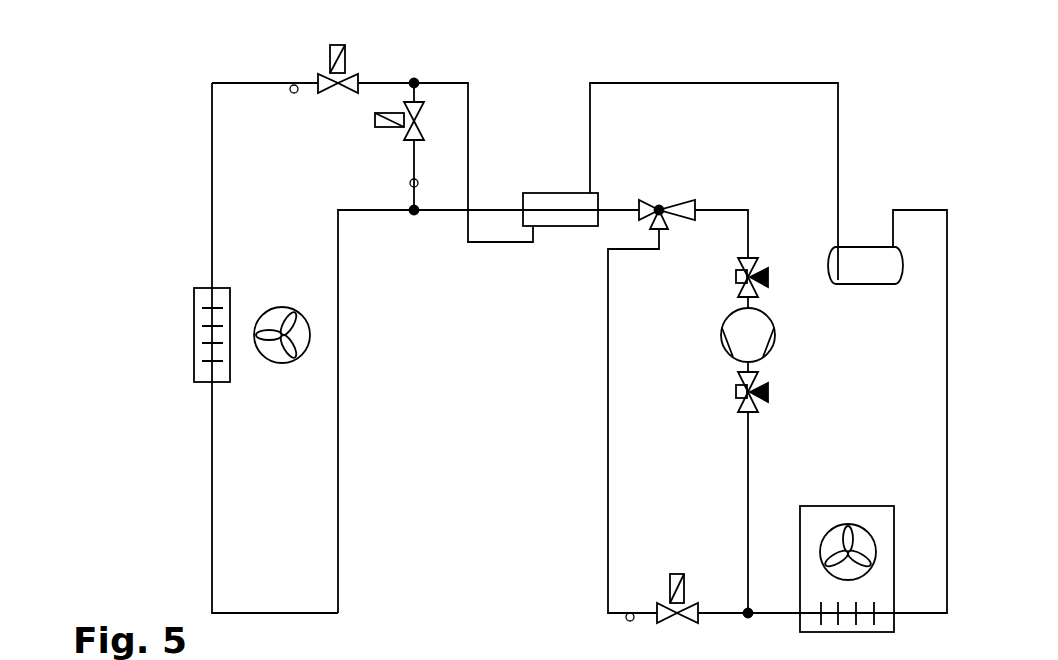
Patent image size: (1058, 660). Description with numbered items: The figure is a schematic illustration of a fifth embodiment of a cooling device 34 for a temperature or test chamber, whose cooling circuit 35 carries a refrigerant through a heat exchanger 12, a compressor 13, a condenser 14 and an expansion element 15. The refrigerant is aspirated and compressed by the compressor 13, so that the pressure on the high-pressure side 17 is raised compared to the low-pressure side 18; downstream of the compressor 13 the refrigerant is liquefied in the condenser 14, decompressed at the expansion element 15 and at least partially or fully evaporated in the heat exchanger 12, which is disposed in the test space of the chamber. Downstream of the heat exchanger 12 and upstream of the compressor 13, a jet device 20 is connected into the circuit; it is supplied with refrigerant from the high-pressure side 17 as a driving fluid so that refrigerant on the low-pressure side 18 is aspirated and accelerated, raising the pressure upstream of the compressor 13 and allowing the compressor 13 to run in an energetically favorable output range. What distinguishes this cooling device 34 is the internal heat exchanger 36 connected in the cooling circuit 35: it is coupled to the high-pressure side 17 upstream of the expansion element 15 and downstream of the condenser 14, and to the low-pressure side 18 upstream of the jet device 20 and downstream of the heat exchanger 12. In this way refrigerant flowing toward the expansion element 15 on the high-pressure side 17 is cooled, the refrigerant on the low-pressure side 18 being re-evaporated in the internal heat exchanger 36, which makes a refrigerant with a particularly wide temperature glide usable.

The heat exchanger 12 is at (202, 335).
The compressor 13 is at (748, 335).
The condenser 14 is at (848, 518).
The expansion element 15 is at (352, 72).
The high-pressure side 17 is at (670, 82).
The low-pressure side 18 is at (340, 375).
The jet device 20 is at (683, 207).
The cooling device 34 is at (155, 78).
The cooling circuit 35 is at (203, 157).
The internal heat exchanger 36 is at (547, 200).